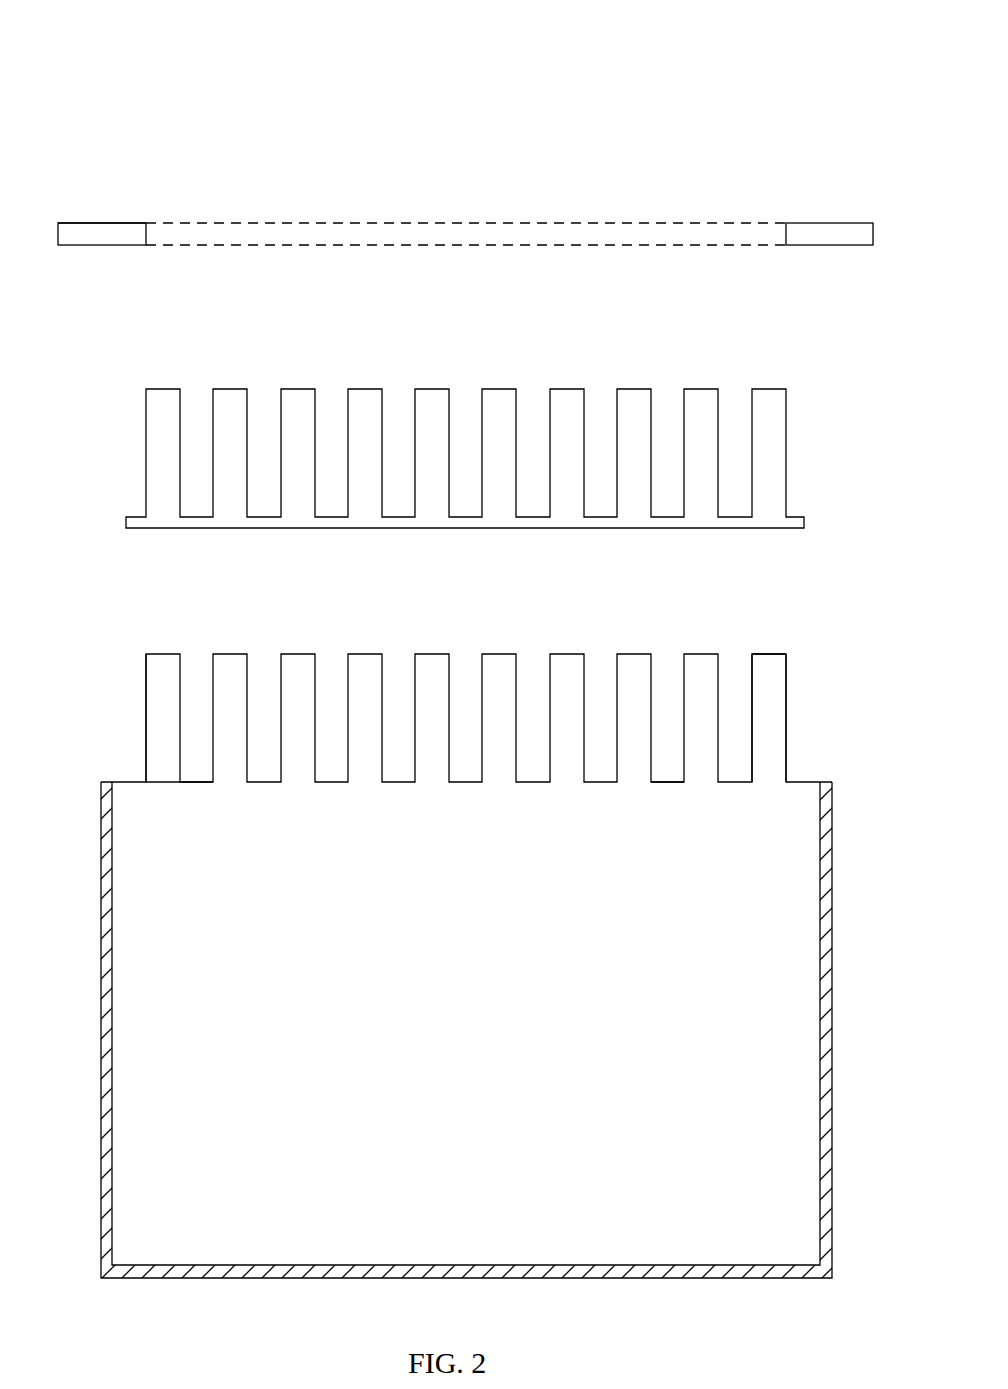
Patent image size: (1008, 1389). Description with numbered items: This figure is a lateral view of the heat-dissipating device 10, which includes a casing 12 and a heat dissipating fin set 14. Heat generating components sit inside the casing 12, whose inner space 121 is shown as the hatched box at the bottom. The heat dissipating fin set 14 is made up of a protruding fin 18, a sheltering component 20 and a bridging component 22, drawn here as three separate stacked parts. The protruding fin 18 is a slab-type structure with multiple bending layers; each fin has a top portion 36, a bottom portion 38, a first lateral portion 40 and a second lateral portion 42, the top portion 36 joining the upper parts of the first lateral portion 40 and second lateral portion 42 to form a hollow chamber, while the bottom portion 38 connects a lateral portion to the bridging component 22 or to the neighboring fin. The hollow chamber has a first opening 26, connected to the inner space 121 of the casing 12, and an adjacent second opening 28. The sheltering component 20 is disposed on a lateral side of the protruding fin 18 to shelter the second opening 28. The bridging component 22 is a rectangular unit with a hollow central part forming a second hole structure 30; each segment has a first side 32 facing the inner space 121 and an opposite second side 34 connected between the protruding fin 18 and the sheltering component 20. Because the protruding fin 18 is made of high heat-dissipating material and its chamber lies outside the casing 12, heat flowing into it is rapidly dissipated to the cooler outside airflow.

The heat-dissipating device 10 is at (731, 90).
The casing 12 is at (802, 1278).
The inner space 121 is at (168, 1096).
The heat dissipating fin set 14 is at (466, 461).
The protruding fin 18 is at (211, 623).
The sheltering component 20 is at (699, 420).
The bridging component 22 is at (825, 233).
The first opening 26 is at (156, 794).
The second opening 28 is at (135, 709).
The second hole structure 30 is at (480, 232).
The first side 32 is at (108, 245).
The second side 34 is at (108, 223).
The top portion 36 is at (768, 654).
The bottom portion 38 is at (667, 783).
The first lateral portion 40 is at (787, 742).
The second lateral portion 42 is at (753, 697).